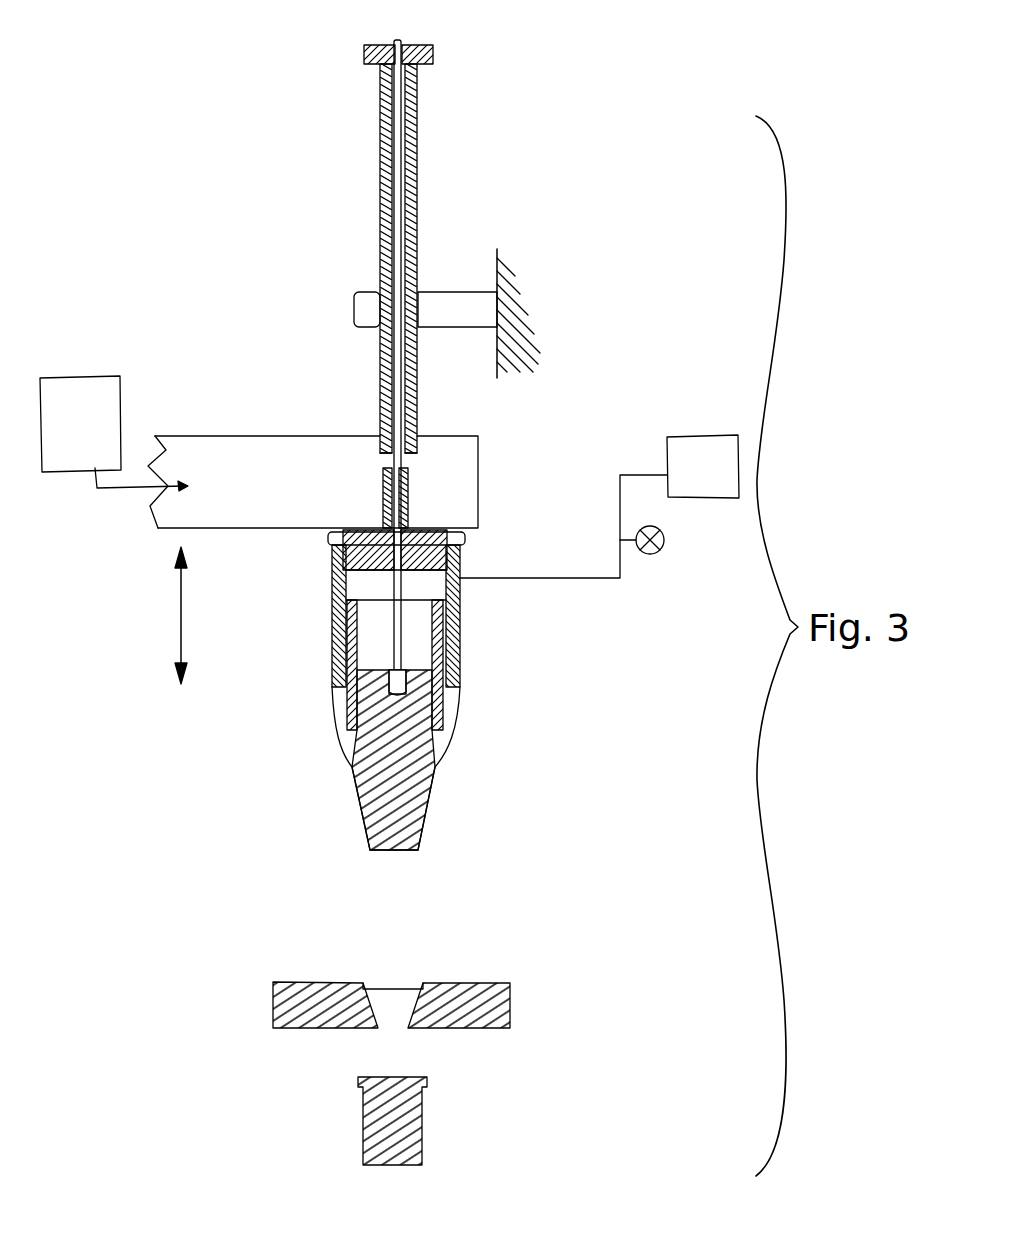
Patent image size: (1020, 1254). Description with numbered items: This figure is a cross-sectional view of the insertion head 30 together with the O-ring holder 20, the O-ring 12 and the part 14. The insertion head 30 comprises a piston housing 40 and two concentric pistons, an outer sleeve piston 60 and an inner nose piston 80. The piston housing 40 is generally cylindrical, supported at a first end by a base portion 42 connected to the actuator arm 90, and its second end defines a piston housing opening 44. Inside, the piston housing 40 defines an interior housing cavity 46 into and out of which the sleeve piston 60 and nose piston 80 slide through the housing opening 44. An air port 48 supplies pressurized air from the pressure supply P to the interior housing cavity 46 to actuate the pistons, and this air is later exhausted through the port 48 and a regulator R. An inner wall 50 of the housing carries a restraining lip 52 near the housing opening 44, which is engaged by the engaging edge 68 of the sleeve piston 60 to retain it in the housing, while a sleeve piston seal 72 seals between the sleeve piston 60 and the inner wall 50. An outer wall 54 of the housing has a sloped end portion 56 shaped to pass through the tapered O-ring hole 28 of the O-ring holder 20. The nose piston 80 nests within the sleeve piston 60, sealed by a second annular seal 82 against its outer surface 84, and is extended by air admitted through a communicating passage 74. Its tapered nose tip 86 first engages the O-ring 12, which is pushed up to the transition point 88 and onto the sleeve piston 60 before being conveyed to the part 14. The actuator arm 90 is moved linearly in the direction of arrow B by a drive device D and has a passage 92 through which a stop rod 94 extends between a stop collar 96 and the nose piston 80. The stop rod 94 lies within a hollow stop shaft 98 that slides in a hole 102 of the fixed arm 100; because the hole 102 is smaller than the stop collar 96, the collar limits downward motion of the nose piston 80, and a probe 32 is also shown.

The O-ring 12 is at (407, 983).
The part 14 is at (410, 1113).
The O-ring holder 20 is at (510, 1008).
The tapered O-ring hole 28 is at (386, 1015).
The insertion head 30 is at (507, 114).
The probe 32 is at (460, 620).
The piston housing 40 is at (479, 558).
The base portion 42 is at (410, 606).
The piston housing opening 44 is at (440, 777).
The interior housing cavity 46 is at (338, 585).
The air port 48 is at (461, 585).
The inner wall 50 is at (333, 578).
The restraining lip 52 is at (340, 717).
The outer wall 54 is at (346, 672).
The sloped end portion 56 is at (342, 740).
The outer sleeve piston 60 is at (460, 672).
The engaging edge 68 is at (460, 657).
The sleeve piston seal 72 is at (334, 640).
The communicating passage 74 is at (462, 572).
The inner nose piston 80 is at (408, 788).
The second annular seal 82 is at (345, 690).
The outer surface 84 is at (340, 707).
The nose tip 86 is at (446, 838).
The transition point 88 is at (358, 793).
The actuator arm 90 is at (244, 460).
The passage 92 is at (368, 433).
The stop rod 94 is at (398, 88).
The stop collar 96 is at (432, 56).
The hollow stop shaft 98 is at (382, 178).
The fixed arm 100 is at (447, 302).
The hole 102 is at (422, 274).
The drive device D is at (114, 433).
The pressure supply P is at (599, 506).
The regulator R is at (654, 539).
The arrow B is at (180, 617).